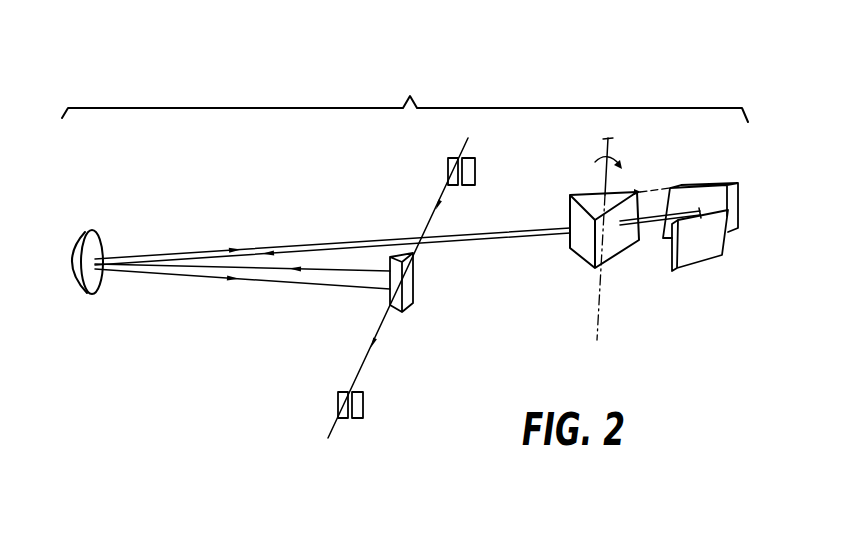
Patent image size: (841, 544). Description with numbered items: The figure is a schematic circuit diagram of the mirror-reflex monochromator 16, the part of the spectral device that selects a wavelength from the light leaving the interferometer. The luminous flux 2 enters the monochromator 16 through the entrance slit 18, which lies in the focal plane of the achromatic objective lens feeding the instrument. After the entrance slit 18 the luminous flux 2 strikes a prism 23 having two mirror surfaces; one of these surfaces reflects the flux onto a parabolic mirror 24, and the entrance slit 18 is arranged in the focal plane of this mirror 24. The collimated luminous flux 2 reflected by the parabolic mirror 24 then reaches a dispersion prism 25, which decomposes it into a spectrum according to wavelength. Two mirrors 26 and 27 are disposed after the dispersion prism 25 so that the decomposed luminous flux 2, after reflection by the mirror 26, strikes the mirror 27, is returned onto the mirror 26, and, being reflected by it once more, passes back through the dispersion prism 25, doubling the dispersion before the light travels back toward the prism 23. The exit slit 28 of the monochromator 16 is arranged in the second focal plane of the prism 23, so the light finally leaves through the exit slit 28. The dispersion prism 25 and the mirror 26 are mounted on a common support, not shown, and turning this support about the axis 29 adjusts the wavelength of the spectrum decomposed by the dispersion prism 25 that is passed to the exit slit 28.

The mirror-reflex monochromator 16 is at (405, 90).
The luminous flux 2 is at (428, 223).
The entrance slit 18 is at (456, 151).
The prism 23 is at (410, 287).
The parabolic mirror 24 is at (82, 238).
The dispersion prism 25 is at (618, 240).
The mirror 26 is at (685, 190).
The mirror 27 is at (706, 232).
The exit slit 28 is at (327, 394).
The axis 29 is at (607, 150).